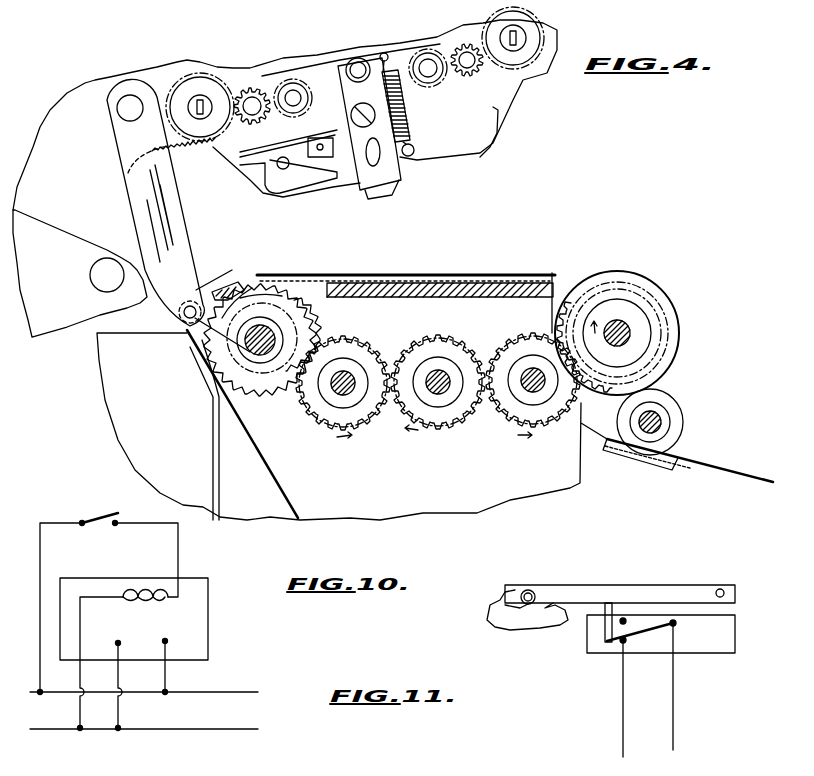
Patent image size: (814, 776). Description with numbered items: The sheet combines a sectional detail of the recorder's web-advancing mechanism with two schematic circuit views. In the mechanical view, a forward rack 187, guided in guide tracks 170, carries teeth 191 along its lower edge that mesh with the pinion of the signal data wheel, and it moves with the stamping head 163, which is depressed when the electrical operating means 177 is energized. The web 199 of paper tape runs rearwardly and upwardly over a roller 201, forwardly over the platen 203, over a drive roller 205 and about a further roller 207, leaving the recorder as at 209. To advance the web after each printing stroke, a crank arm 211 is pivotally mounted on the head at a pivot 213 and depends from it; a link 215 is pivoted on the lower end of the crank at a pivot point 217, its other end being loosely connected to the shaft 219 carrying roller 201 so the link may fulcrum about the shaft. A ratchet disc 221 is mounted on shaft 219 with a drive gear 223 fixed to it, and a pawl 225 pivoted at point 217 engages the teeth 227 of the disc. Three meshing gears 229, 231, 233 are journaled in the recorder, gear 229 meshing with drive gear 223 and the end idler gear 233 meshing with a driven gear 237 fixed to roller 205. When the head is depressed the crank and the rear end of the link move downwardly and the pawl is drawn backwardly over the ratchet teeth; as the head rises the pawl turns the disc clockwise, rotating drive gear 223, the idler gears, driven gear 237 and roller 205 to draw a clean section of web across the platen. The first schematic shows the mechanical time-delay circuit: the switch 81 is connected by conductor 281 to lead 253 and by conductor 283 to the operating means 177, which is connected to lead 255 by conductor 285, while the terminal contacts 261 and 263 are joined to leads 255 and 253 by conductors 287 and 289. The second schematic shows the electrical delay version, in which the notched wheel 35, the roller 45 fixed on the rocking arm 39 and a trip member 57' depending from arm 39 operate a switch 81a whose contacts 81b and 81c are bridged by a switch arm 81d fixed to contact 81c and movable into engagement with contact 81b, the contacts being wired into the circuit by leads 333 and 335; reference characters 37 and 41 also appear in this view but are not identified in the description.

In FIG. 4, the stamping head 163 is at (517, 115).
In FIG. 4, the guide tracks 170 is at (425, 117).
In FIG. 4, the forward rack 187 is at (408, 97).
In FIG. 4, the teeth 191 is at (193, 156).
In FIG. 4, the web 199 is at (277, 477).
In FIG. 4, the roller 201 is at (302, 332).
In FIG. 4, the platen 203 is at (593, 272).
In FIG. 4, the drive roller 205 is at (670, 347).
In FIG. 4, the further roller 207 is at (673, 432).
In FIG. 4, the extending web portion 209 is at (712, 468).
In FIG. 4, the crank arm 211 is at (181, 230).
In FIG. 4, the pivot 213 is at (120, 98).
In FIG. 4, the link 215 is at (197, 337).
In FIG. 4, the pivot point 217 is at (187, 320).
In FIG. 4, the shaft 219 is at (276, 400).
In FIG. 4, the ratchet disc 221 is at (262, 298).
In FIG. 4, the drive gear 223 is at (300, 340).
In FIG. 4, the pawl 225 is at (214, 288).
In FIG. 4, the teeth 227 is at (252, 284).
In FIG. 4, the gear 229 is at (377, 400).
In FIG. 4, the gear 231 is at (413, 403).
In FIG. 4, the end idler gear 233 is at (545, 410).
In FIG. 4, the driven gear 237 is at (652, 342).
In FIG. 10, the switch 81 is at (97, 501).
In FIG. 11, the switch 81a is at (708, 653).
In FIG. 11, the contact 81b is at (620, 645).
In FIG. 11, the contact 81c is at (674, 623).
In FIG. 11, the switch arm 81d is at (644, 636).
In FIG. 10, the operating means 177 is at (137, 592).
In FIG. 10, the lead 253 is at (233, 690).
In FIG. 10, the lead 255 is at (227, 728).
In FIG. 10, the terminal contact 261 is at (121, 648).
In FIG. 10, the terminal contact 263 is at (167, 650).
In FIG. 10, the conductor 281 is at (41, 562).
In FIG. 10, the conductor 283 is at (179, 547).
In FIG. 10, the conductor 285 is at (81, 640).
In FIG. 10, the conductor 287 is at (120, 677).
In FIG. 10, the conductor 289 is at (168, 677).
In FIG. 11, the notched wheel 35 is at (533, 625).
In FIG. 11, the support member 37 is at (505, 605).
In FIG. 11, the rocking arm 39 is at (690, 587).
In FIG. 11, the hole 41 is at (727, 593).
In FIG. 11, the roller 45 is at (532, 592).
In FIG. 11, the trip member 57' is at (622, 603).
In FIG. 11, the lead 333 is at (623, 732).
In FIG. 11, the lead 335 is at (678, 730).